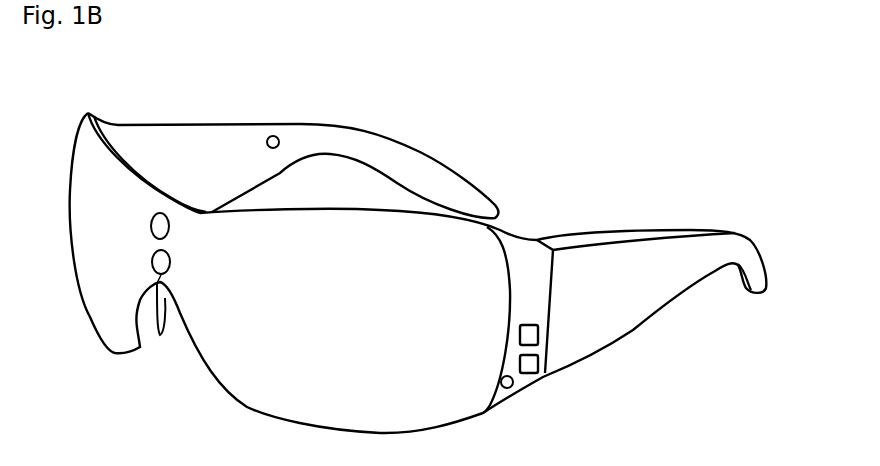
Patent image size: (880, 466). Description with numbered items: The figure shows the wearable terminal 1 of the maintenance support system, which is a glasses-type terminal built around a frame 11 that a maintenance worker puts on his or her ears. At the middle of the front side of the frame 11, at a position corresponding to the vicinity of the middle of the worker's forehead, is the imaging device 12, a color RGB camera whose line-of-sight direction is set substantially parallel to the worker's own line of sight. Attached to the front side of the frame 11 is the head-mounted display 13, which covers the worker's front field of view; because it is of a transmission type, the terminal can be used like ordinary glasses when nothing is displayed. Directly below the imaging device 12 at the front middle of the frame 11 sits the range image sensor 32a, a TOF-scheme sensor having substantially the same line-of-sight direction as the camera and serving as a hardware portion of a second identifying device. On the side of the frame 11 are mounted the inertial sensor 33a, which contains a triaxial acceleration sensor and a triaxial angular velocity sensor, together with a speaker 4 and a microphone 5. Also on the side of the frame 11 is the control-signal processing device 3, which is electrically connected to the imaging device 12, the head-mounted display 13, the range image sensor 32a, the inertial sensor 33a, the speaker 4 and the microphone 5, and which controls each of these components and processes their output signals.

The wearable terminal 1 is at (135, 60).
The frame 11 is at (154, 141).
The head-mounted display 13 is at (283, 370).
The speaker 4 is at (272, 136).
The imaging device 12 is at (162, 222).
The range image sensor 32a is at (158, 333).
The control-signal processing device 3 is at (537, 332).
The inertial sensor 33a is at (528, 368).
The microphone 5 is at (505, 389).